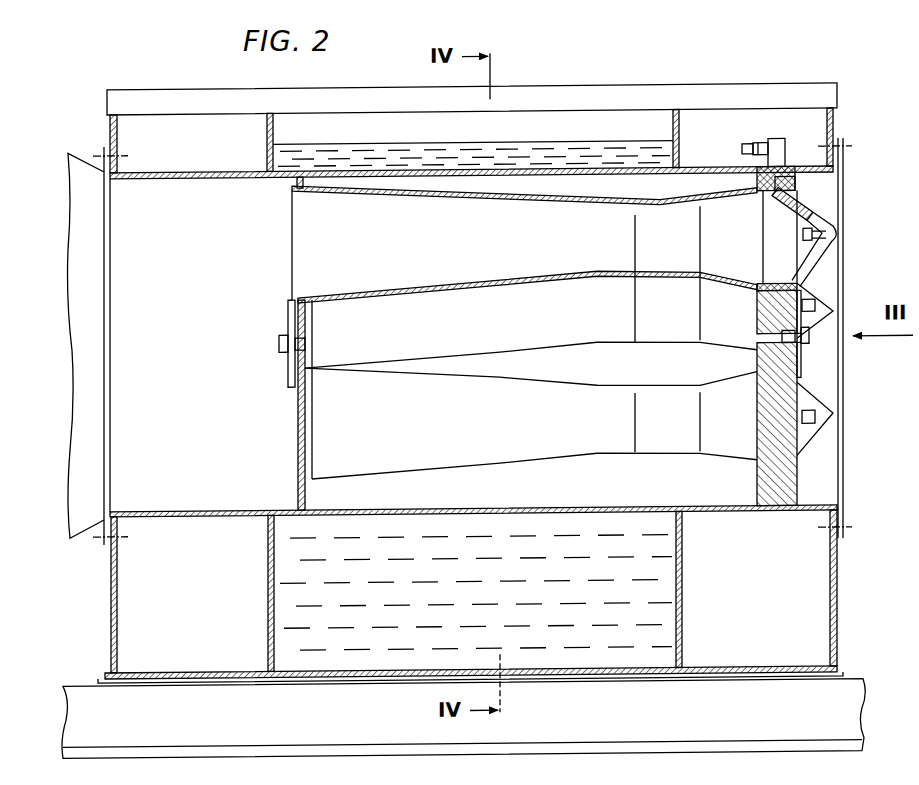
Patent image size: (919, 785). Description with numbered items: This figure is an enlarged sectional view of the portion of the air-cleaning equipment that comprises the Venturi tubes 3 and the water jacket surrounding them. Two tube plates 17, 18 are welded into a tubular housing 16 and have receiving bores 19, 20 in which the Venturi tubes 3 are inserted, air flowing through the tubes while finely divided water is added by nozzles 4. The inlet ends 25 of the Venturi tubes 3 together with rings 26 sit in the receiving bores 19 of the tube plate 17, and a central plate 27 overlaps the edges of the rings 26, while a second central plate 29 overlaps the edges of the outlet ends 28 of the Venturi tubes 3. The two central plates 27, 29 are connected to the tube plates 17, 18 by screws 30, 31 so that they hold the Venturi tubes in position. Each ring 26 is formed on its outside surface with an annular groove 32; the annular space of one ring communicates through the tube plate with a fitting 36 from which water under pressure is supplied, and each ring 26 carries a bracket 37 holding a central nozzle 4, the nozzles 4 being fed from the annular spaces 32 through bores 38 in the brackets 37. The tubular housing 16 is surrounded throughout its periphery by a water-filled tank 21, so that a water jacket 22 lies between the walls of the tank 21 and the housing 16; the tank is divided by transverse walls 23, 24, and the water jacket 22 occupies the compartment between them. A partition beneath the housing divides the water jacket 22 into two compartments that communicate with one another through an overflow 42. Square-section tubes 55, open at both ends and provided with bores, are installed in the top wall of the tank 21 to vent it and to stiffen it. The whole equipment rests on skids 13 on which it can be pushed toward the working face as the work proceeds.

The Venturi tube 3 is at (497, 286).
The nozzle 4 is at (818, 240).
The skid 13 is at (772, 756).
The tubular housing 16 is at (478, 517).
The tube plate 17 is at (778, 498).
The tube plate 18 is at (303, 519).
The receiving bore 19 is at (757, 305).
The receiving bore 20 is at (298, 304).
The water tank 21 is at (360, 686).
The water jacket 22 is at (418, 623).
The transverse wall 23 is at (268, 597).
The transverse wall 24 is at (682, 606).
The inlet end 25 is at (765, 229).
The ring 26 is at (793, 195).
The central plate 27 is at (801, 379).
The outlet end 28 is at (300, 256).
The central plate 29 is at (290, 327).
The screw 30 is at (810, 347).
The screw 31 is at (283, 347).
The annular groove 32 is at (790, 179).
The fitting 36 is at (775, 147).
The bracket 37 is at (800, 264).
The bore 38 is at (810, 214).
The overflow 42 is at (586, 145).
The square-section tube 55 is at (536, 101).